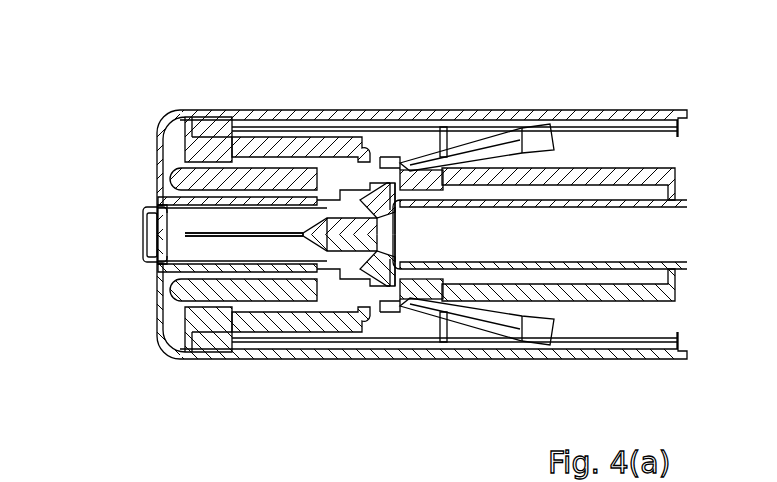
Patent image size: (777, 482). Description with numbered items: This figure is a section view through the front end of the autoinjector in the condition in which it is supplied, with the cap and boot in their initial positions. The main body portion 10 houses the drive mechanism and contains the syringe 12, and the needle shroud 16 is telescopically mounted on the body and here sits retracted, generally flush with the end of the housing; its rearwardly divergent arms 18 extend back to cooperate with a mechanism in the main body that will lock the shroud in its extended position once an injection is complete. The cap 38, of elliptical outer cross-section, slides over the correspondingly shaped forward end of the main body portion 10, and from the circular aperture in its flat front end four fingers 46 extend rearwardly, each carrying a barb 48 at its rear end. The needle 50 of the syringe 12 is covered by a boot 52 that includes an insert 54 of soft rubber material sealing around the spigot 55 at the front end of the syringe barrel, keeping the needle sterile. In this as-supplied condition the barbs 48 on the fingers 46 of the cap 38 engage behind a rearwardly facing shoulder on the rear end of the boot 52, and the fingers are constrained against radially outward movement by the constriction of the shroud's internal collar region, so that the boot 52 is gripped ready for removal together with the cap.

The main body portion 10 is at (628, 110).
The syringe 12 is at (562, 247).
The needle shroud 16 is at (468, 304).
The rearwardly divergent arms 18 is at (518, 148).
The cap 38 is at (165, 340).
The fingers 46 is at (330, 185).
The barbs 48 is at (400, 200).
The needle 50 is at (230, 237).
The boot 52 is at (128, 222).
The insert 54 is at (165, 220).
The spigot 55 is at (322, 243).